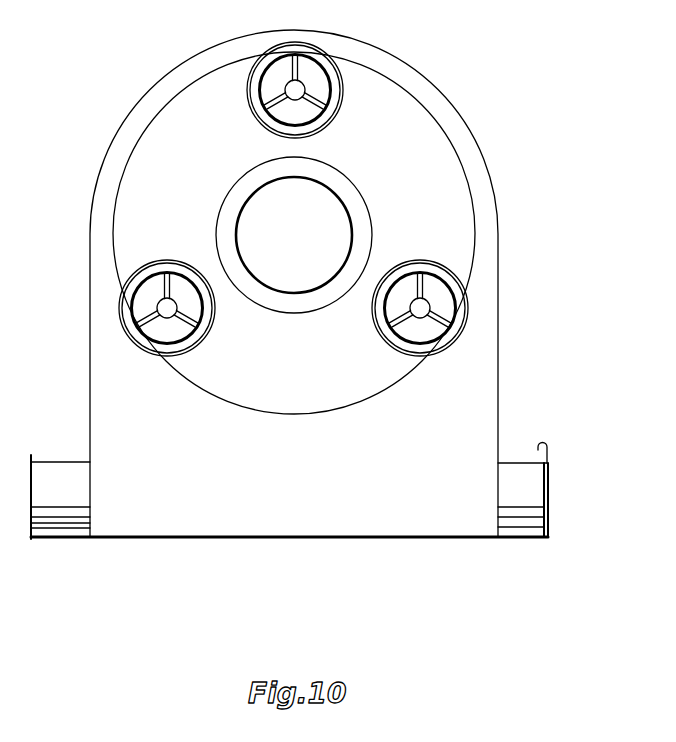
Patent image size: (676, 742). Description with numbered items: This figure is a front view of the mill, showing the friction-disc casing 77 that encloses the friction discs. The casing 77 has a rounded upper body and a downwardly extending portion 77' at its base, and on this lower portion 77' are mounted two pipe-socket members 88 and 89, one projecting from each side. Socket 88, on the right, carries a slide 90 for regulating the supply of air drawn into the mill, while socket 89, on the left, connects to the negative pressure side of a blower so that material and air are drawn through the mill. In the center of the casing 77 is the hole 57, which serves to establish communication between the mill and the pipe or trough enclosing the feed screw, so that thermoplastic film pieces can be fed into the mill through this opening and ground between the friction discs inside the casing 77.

The friction-disc casing 77 is at (294, 275).
The hole 57 is at (328, 220).
The downwardly extending portion 77' is at (289, 562).
The pipe-socket member 88 is at (513, 525).
The pipe-socket member 89 is at (57, 520).
The slide 90 is at (549, 453).